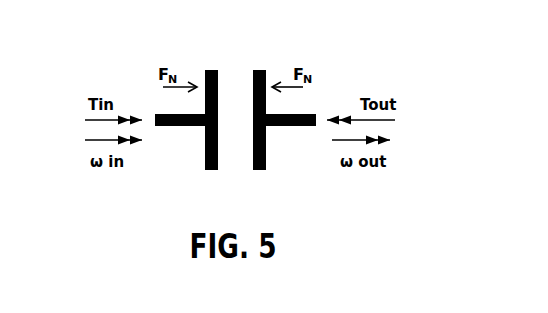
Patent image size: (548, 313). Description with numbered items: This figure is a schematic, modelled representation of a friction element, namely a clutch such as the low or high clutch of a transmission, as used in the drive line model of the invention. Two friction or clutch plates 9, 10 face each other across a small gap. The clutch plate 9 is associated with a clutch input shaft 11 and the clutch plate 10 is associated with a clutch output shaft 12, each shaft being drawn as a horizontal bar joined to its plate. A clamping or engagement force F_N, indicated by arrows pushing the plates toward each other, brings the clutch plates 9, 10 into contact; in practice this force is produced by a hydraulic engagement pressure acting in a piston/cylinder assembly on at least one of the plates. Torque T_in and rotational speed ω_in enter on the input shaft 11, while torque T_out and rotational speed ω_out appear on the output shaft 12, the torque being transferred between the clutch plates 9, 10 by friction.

The clutch plate 9 is at (207, 69).
The clutch plate 10 is at (264, 69).
The clutch input shaft 11 is at (186, 126).
The clutch output shaft 12 is at (279, 126).